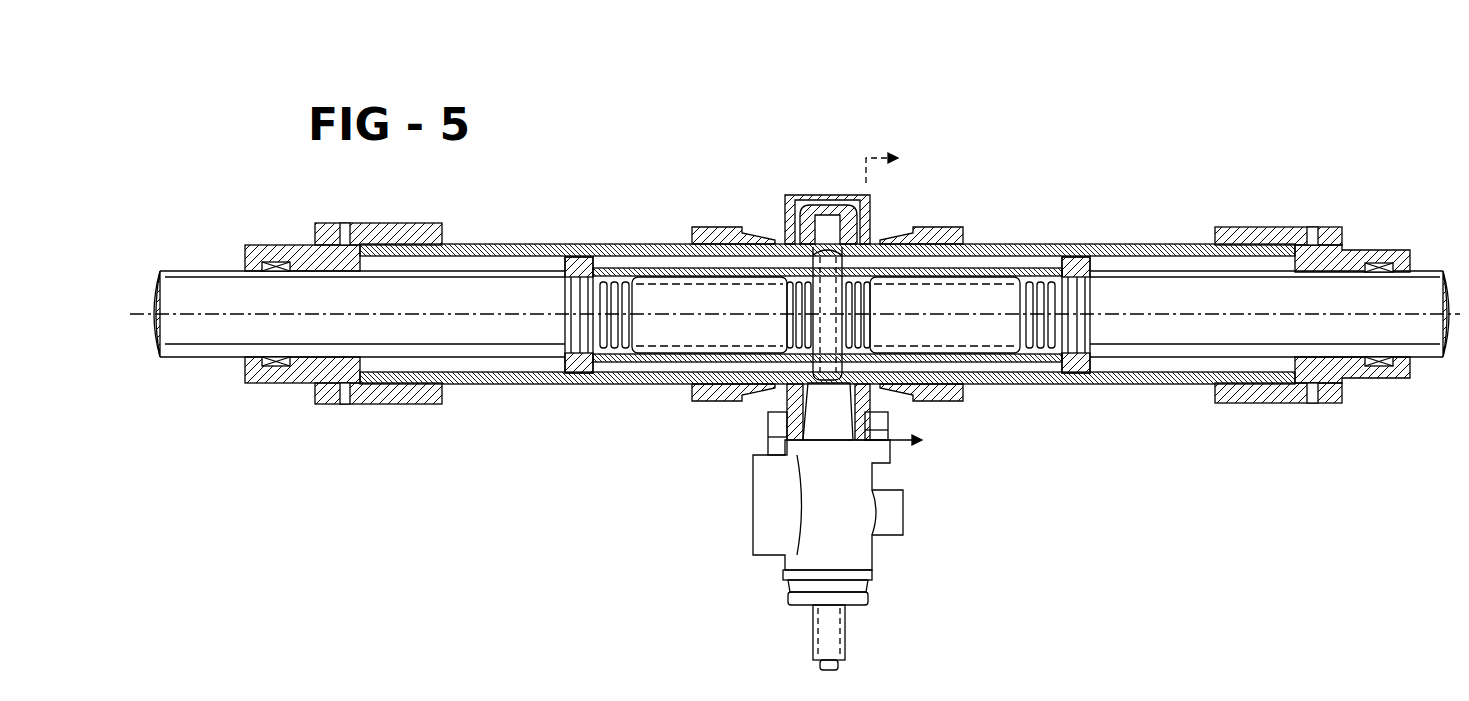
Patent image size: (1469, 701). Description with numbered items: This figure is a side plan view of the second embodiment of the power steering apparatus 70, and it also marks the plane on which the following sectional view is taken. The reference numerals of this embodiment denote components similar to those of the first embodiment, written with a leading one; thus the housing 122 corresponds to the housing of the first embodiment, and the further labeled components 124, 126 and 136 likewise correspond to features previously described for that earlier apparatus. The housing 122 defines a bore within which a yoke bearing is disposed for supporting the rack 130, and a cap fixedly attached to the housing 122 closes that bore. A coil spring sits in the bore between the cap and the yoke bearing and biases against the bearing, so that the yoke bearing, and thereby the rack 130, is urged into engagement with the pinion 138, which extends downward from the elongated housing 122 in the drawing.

The power steering apparatus 70 is at (1160, 84).
The housing 122 is at (1175, 243).
The inner tube 124 is at (945, 313).
The nut 126 is at (1033, 258).
The rack 130 is at (888, 263).
The valve 136 is at (903, 508).
The pinion 138 is at (843, 253).